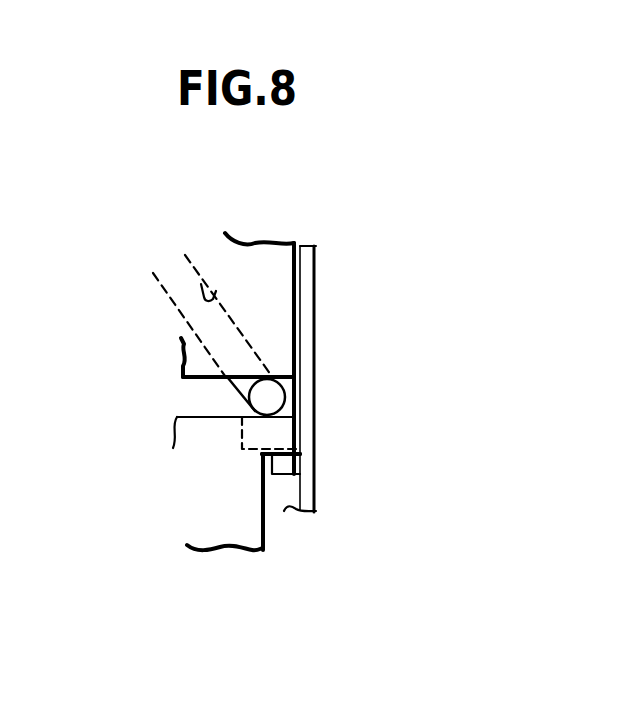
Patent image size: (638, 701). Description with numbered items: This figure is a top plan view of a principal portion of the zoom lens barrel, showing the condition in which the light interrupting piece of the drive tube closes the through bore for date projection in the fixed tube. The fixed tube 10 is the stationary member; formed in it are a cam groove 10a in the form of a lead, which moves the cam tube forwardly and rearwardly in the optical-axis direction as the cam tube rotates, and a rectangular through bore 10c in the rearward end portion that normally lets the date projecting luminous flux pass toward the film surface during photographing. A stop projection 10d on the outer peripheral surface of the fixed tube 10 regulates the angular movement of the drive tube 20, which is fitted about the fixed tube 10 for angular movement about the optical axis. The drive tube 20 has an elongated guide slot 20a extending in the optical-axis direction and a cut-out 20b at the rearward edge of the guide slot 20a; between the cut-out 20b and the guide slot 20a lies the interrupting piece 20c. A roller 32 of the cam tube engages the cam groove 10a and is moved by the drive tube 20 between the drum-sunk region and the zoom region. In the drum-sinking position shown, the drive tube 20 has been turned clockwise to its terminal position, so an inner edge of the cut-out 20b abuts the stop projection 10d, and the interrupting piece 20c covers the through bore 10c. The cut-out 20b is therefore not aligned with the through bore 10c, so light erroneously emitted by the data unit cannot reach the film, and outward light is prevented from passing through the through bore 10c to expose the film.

The fixed tube 10 is at (308, 323).
The cam groove 10a is at (203, 283).
The through bore 10c is at (282, 432).
The stop projection 10d is at (288, 462).
The drive tube 20 is at (268, 261).
The guide slot 20a is at (188, 398).
The cut-out 20b is at (263, 517).
The interrupting piece 20c is at (270, 440).
The roller 32 is at (268, 397).